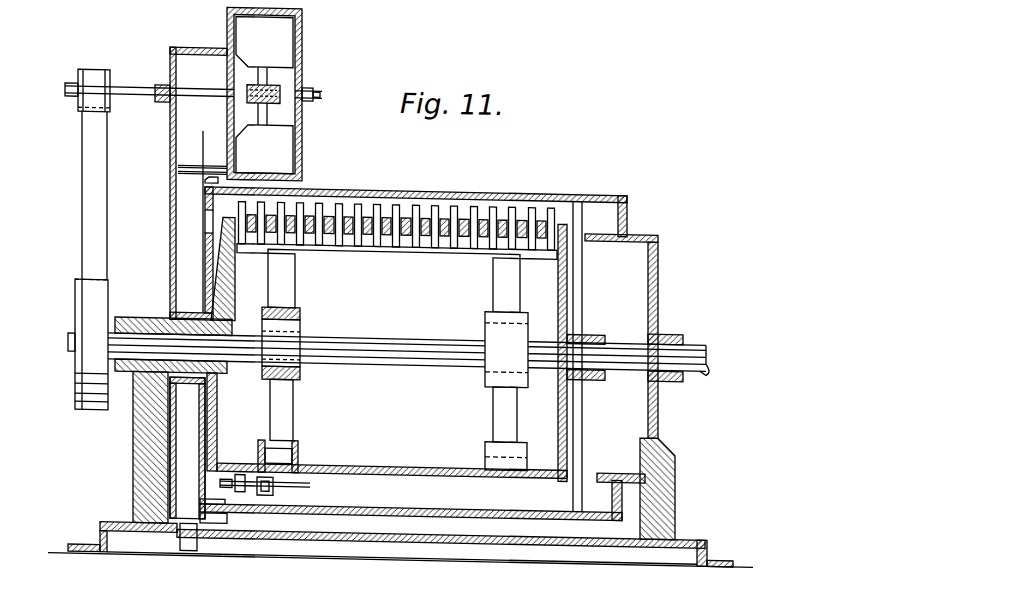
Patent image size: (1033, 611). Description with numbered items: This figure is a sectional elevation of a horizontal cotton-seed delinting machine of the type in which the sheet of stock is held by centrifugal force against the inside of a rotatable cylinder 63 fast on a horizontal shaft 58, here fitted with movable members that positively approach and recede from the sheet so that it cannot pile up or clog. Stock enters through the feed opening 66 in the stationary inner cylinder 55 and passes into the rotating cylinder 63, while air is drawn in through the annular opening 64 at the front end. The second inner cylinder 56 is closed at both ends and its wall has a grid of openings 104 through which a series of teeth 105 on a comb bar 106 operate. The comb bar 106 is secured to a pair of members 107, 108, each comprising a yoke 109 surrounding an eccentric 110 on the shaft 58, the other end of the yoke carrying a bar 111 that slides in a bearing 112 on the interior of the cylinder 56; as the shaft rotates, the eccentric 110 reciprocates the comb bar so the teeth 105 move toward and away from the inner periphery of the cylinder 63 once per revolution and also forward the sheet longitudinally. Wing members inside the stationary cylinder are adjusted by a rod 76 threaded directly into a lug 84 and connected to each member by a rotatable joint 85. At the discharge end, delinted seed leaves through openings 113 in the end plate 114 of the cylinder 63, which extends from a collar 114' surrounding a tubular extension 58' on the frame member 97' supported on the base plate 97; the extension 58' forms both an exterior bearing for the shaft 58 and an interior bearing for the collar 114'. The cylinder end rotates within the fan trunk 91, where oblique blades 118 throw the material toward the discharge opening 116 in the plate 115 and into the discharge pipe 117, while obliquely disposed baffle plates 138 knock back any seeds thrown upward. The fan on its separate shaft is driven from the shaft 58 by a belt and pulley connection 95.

The inner cylindrical casing 55 is at (605, 470).
The second inner cylindrical casing 56 is at (382, 469).
The horizontal shaft 58 is at (408, 373).
The tubular extension 58' is at (92, 359).
The cylinder 63 is at (508, 193).
The opening 64 is at (628, 218).
The feed opening 66 is at (640, 227).
The rod 76 is at (295, 490).
The lug 84 is at (242, 500).
The rotatable joint 85 is at (265, 500).
The fan trunk 91 is at (178, 177).
The belt and pulley connection 95 is at (80, 164).
The base plate 97 is at (400, 566).
The frame member 97' is at (333, 451).
The openings 104 is at (358, 196).
The teeth 105 is at (425, 202).
The comb bar 106 is at (440, 247).
The member 107 is at (300, 291).
The member 108 is at (492, 282).
The yoke 109 is at (302, 321).
The eccentric 110 is at (290, 352).
The bar 111 is at (285, 418).
The bearing 112 is at (300, 454).
The openings 113 is at (205, 226).
The end plate 114 is at (178, 267).
The collar 114' is at (167, 302).
The plate 115 is at (225, 517).
The discharge opening 116 is at (187, 522).
The discharge pipe 117 is at (180, 551).
The oblique blades 118 is at (212, 183).
The baffle plates 138 is at (190, 169).